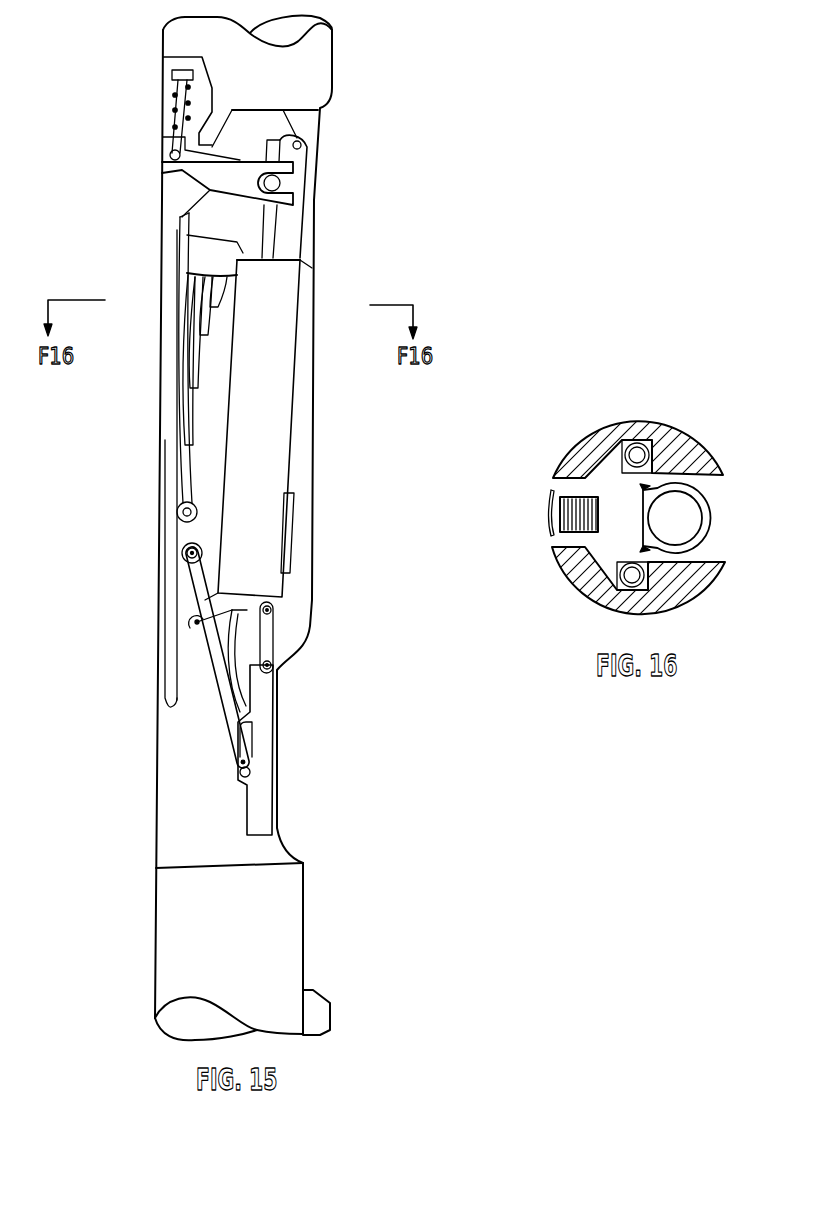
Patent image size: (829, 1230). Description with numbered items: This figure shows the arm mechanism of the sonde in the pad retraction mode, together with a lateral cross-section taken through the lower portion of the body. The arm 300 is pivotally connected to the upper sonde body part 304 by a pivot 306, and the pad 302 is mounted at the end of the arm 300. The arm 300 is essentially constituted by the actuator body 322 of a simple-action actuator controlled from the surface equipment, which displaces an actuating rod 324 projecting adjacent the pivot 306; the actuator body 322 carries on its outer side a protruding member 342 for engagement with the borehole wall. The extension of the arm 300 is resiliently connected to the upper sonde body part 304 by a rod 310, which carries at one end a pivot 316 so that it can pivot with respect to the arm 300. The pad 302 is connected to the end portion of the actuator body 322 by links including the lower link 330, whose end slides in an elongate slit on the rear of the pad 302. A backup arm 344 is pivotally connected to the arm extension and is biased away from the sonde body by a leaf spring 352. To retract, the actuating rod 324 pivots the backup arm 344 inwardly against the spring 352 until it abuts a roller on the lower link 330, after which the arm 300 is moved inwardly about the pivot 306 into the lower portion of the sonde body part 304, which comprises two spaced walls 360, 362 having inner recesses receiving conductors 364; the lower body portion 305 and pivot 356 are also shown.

In FIG. 15, the arm 300 is at (392, 258).
In FIG. 15, the pad 302 is at (393, 748).
In FIG. 15, the upper sonde body part 304 is at (393, 40).
In FIG. 15, the lower tubular housing 305 is at (372, 955).
In FIG. 15, the pivot 306 is at (382, 118).
In FIG. 15, the rod 310 is at (183, 117).
In FIG. 15, the pivot 316 is at (171, 180).
In FIG. 15, the actuator body 322 is at (392, 398).
In FIG. 15, the actuating rod 324 is at (393, 207).
In FIG. 15, the lower link 330 is at (118, 745).
In FIG. 16, the protruding member 342 is at (757, 515).
In FIG. 15, the backup arm 344 is at (165, 490).
In FIG. 16, the backup arm 344 is at (547, 500).
In FIG. 15, the leaf spring 352 is at (177, 370).
In FIG. 16, the leaf spring 352 is at (562, 530).
In FIG. 15, the pivot pin 356 is at (112, 595).
In FIG. 15, the wall 360 is at (118, 805).
In FIG. 16, the wall 360 is at (662, 420).
In FIG. 16, the wall 362 is at (677, 620).
In FIG. 16, the conductors 364 is at (622, 440).